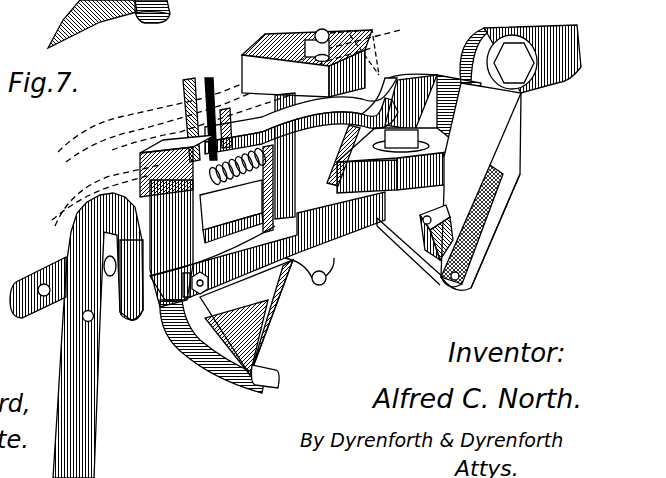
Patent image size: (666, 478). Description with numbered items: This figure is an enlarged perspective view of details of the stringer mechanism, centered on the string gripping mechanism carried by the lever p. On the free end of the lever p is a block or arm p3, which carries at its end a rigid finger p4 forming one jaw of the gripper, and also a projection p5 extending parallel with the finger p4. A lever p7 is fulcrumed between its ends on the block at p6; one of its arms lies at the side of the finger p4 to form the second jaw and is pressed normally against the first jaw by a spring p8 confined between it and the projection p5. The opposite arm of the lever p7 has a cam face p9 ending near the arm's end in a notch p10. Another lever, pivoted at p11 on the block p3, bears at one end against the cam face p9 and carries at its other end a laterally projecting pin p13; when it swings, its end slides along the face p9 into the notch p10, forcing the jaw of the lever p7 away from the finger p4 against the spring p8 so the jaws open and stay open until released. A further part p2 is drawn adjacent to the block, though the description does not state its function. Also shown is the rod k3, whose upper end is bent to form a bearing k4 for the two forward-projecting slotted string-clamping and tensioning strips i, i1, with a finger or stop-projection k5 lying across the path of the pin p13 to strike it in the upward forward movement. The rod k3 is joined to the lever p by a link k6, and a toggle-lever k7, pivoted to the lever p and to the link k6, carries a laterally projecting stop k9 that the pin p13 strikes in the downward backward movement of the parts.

The string-clamping and tensioning strip i is at (70, 152).
The string-clamping and tensioning strip i1 is at (103, 13).
The rod k3 is at (62, 351).
The bearing k4 is at (282, 22).
The finger or stop-projection k5 is at (362, 110).
The link k6 is at (422, 75).
The toggle-lever k7 is at (472, 205).
The stop k9 is at (423, 263).
The lever p is at (553, 70).
The triangular plate p2 is at (266, 300).
The block or arm p3 is at (369, 223).
The finger p4 is at (142, 312).
The projection p5 is at (268, 187).
The fulcrum p6 is at (211, 280).
The lever p7 is at (167, 312).
The spring p8 is at (186, 144).
The cam face p9 is at (210, 367).
The notch p10 is at (274, 382).
The pivot p11 is at (327, 278).
The pin p13 is at (329, 155).